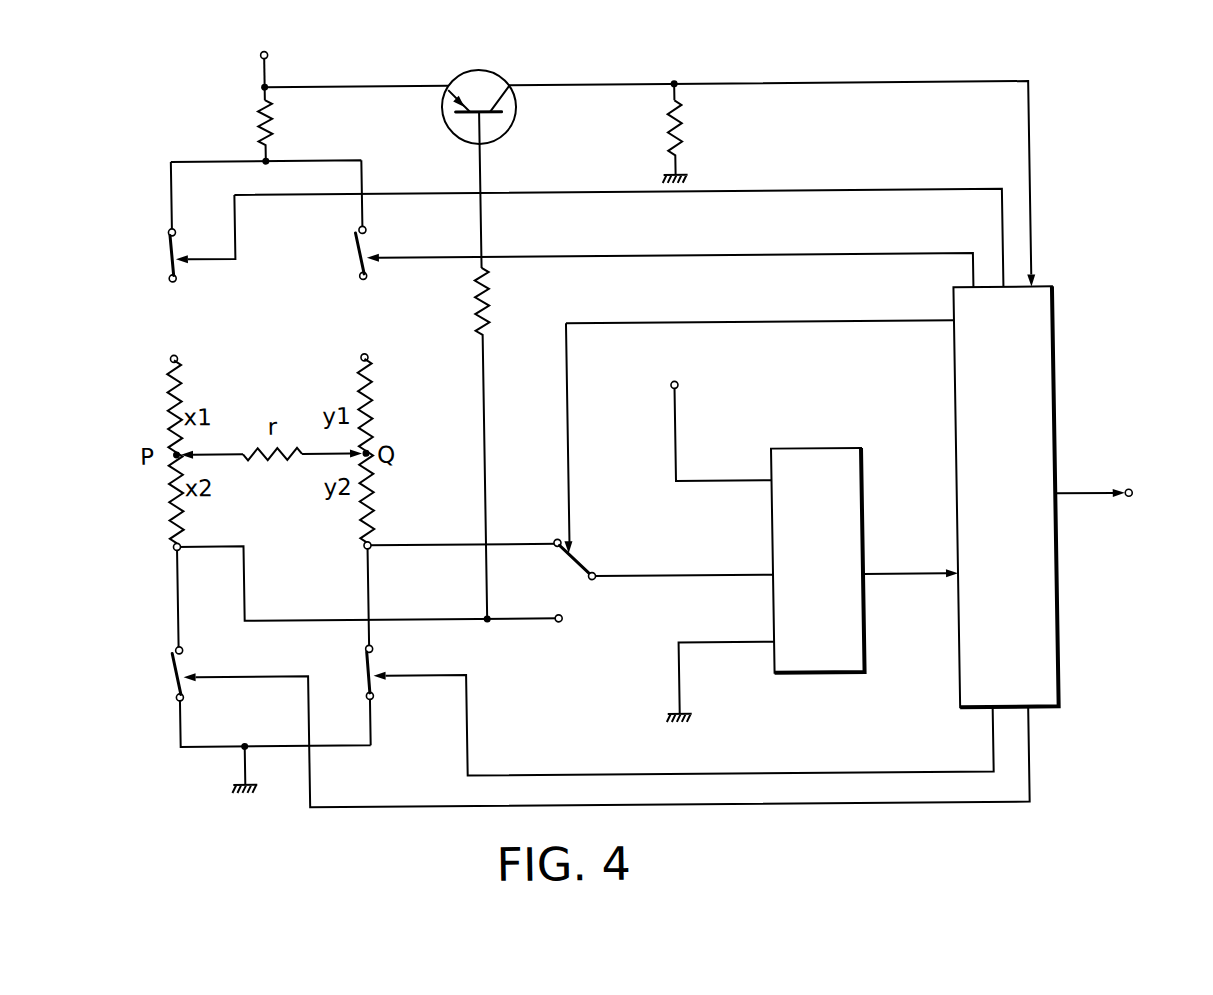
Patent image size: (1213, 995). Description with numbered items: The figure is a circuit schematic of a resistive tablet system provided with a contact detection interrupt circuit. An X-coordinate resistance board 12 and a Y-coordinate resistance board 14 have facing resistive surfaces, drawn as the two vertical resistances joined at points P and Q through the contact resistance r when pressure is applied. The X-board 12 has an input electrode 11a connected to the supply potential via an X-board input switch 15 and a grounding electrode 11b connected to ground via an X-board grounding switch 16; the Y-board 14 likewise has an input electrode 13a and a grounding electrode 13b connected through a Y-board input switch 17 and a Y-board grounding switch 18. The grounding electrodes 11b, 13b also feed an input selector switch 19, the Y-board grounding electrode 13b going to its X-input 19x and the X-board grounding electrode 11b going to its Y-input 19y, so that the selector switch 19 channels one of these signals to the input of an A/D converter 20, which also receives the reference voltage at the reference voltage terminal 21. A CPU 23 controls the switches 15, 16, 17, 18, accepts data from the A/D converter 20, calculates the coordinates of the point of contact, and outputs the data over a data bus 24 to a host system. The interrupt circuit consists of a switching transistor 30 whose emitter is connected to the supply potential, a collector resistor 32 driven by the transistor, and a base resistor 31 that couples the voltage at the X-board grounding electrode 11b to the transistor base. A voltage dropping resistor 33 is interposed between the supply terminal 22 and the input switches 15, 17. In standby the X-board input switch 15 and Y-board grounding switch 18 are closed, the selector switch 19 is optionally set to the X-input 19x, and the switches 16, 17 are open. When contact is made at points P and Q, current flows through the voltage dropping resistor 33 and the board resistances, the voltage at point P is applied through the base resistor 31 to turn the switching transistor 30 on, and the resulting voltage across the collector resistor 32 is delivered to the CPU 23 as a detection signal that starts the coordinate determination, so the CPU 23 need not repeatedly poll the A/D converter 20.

The input electrode 11a is at (173, 352).
The grounding electrode 11b is at (174, 546).
The X-coordinate resistance board 12 is at (167, 397).
The input electrode 13a is at (369, 357).
The grounding electrode 13b is at (369, 540).
The Y-coordinate resistance board 14 is at (370, 407).
The X-board input switch 15 is at (168, 254).
The X-board grounding switch 16 is at (178, 669).
The Y-board input switch 17 is at (366, 243).
The Y-board grounding switch 18 is at (369, 664).
The input selector switch 19 is at (583, 558).
The X-input 19x is at (549, 543).
The Y-input 19y is at (560, 620).
The A/D converter 20 is at (815, 455).
The reference voltage terminal Vref 21 is at (672, 383).
The supply terminal 22 is at (265, 53).
The CPU 23 is at (1044, 302).
The data bus 24 is at (1134, 492).
The switching transistor 30 is at (496, 66).
The base resistor 31 is at (496, 312).
The collector resistor 32 is at (687, 131).
The voltage dropping resistor 33 is at (264, 115).